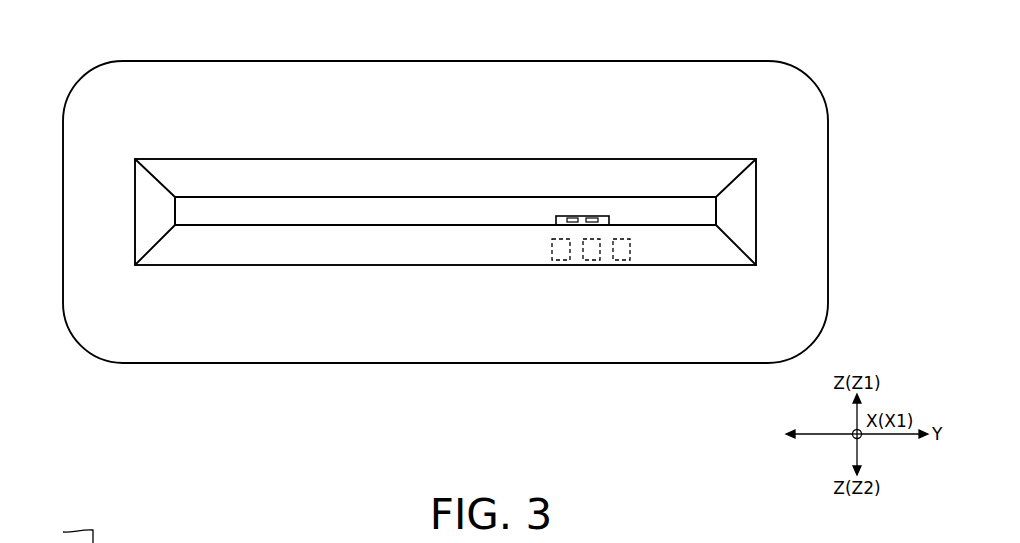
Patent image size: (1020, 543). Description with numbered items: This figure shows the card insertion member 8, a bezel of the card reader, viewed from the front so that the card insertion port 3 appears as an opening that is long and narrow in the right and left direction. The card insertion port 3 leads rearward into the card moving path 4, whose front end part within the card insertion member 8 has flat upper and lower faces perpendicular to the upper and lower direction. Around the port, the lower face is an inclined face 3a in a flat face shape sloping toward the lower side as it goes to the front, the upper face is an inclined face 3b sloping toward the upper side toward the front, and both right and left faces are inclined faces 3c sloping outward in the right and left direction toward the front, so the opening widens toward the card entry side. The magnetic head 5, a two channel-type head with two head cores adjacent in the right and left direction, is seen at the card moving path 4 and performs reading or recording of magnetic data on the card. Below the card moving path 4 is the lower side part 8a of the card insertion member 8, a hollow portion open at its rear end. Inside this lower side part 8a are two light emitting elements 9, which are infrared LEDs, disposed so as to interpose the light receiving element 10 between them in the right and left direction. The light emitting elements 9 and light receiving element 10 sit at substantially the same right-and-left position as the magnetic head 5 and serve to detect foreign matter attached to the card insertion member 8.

The card insertion member 8 is at (416, 60).
The lower side part 8a is at (415, 365).
The card insertion port 3 is at (210, 237).
The inclined face 3a is at (357, 250).
The inclined face 3b is at (378, 170).
The inclined faces 3c is at (145, 213).
The card moving path 4 is at (476, 208).
The magnetic head 5 is at (604, 216).
The light emitting element 9 is at (560, 262).
The light receiving element 10 is at (593, 262).